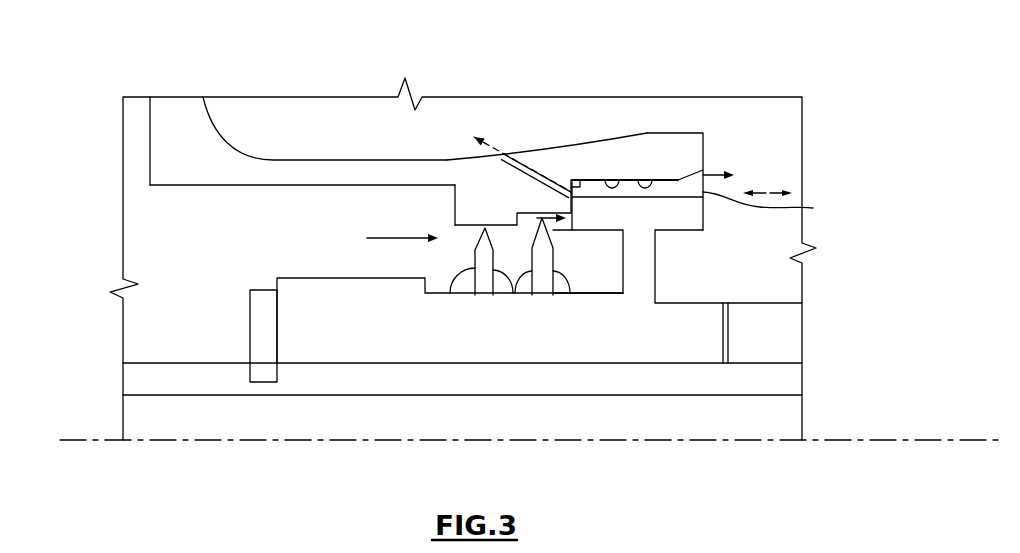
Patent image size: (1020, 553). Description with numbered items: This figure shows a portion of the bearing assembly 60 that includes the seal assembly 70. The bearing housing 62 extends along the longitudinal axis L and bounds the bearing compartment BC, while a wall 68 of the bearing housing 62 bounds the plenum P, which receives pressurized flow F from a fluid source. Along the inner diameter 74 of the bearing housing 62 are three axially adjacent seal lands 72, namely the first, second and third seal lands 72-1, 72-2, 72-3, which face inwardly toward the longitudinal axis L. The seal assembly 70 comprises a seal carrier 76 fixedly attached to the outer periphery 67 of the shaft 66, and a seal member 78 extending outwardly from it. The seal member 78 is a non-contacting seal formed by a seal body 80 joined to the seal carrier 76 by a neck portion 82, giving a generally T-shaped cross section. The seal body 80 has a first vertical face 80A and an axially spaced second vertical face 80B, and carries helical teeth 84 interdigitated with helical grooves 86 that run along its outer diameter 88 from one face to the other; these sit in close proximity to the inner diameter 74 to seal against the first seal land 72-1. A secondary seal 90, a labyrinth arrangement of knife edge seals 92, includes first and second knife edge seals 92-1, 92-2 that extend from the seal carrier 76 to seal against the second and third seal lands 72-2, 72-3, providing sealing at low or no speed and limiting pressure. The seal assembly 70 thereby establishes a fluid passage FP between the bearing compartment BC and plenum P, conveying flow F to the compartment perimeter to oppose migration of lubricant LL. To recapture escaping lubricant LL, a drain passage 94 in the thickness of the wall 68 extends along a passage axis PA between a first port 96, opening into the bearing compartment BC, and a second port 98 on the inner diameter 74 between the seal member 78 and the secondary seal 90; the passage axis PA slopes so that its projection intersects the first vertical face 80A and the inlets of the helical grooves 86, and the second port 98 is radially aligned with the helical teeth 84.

The bearing assembly 60 is at (152, 63).
The bearing housing 62 is at (180, 118).
The shaft 66 is at (780, 378).
The outer periphery 67 is at (693, 362).
The wall 68 is at (150, 143).
The seal assembly 70 is at (766, 181).
The seal lands 72 is at (584, 110).
The first seal land 72-1 is at (620, 178).
The second seal land 72-2 is at (527, 212).
The third seal land 72-3 is at (446, 183).
The inner diameter 74 is at (650, 182).
The seal carrier 76 is at (690, 312).
The seal member 78 is at (730, 232).
The seal body 80 is at (678, 224).
The first vertical face 80A is at (560, 255).
The second vertical face 80B is at (703, 212).
The neck portion 82 is at (647, 278).
The helical teeth 84 is at (774, 209).
The helical grooves 86 is at (632, 197).
The outer diameter 88 is at (678, 180).
The secondary seal 90 is at (465, 245).
The knife edge seals 92 is at (508, 290).
The first knife edge seal 92-1 is at (560, 278).
The second knife edge seal 92-2 is at (447, 298).
The drain passage 94 is at (541, 163).
The first port 96 is at (503, 156).
The second port 98 is at (576, 186).
The plenum P is at (192, 246).
The flow F is at (734, 175).
The fluid passage FP is at (617, 262).
The bearing compartment BC is at (782, 137).
The lubricant LL is at (490, 134).
The passage axis PA is at (524, 158).
The longitudinal axis L is at (886, 440).